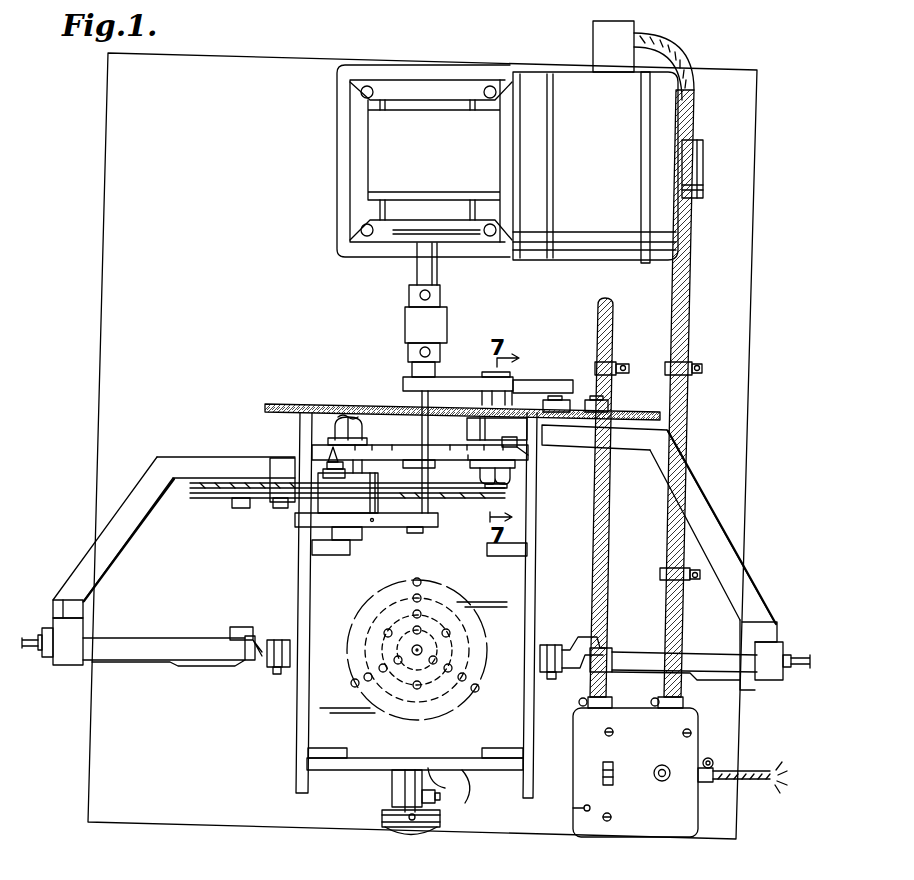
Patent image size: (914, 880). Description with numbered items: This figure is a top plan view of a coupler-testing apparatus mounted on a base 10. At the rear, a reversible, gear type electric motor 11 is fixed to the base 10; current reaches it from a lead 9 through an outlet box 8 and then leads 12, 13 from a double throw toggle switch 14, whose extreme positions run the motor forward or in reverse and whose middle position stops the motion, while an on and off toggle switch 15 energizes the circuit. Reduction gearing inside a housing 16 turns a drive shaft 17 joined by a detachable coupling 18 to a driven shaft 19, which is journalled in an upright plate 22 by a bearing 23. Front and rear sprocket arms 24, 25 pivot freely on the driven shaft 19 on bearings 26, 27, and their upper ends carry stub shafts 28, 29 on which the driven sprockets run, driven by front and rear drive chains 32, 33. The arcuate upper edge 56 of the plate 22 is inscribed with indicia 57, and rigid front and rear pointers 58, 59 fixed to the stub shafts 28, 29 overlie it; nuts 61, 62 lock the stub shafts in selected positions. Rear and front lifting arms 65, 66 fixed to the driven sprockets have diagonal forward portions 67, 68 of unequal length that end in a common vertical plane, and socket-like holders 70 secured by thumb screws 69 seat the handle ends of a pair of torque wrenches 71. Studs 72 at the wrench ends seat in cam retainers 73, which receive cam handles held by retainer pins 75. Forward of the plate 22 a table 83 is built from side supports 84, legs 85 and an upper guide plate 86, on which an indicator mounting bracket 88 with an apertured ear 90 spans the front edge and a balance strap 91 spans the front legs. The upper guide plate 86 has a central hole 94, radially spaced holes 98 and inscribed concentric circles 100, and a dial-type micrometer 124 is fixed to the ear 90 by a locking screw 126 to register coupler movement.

The outlet box 8 is at (674, 828).
The lead 9 is at (756, 771).
The base 10 is at (108, 246).
The electric motor 11 is at (521, 78).
The lead 12 is at (690, 316).
The lead 13 is at (613, 325).
The double throw toggle switch 14 is at (666, 768).
The on and off toggle switch 15 is at (613, 773).
The housing 16 is at (378, 150).
The drive shaft 17 is at (417, 271).
The coupling 18 is at (433, 312).
The driven shaft 19 is at (422, 397).
The upright plate 22 is at (398, 441).
The bearing 23 is at (447, 466).
The front sprocket arm 24 is at (388, 534).
The rear sprocket arm 25 is at (553, 386).
The bearing 26 is at (437, 523).
The bearing 27 is at (437, 376).
The stub shaft 28 is at (338, 414).
The stub shaft 29 is at (505, 489).
The front drive chain 32 is at (392, 487).
The rear drive chain 33 is at (376, 404).
The upper edge 56 is at (442, 453).
The indicia 57 is at (468, 455).
The front pointer 58 is at (318, 451).
The rear pointer 59 is at (518, 452).
The nut 61 is at (335, 428).
The nut 62 is at (512, 474).
The rear lifting arm 65 is at (633, 440).
The front lifting arm 66 is at (187, 460).
The forward portion 67 is at (700, 505).
The forward portion 68 is at (100, 555).
The thumb screw 69 is at (25, 643).
The socket-like holder 70 is at (62, 656).
The torque wrench 71 is at (156, 646).
The stud 72 is at (246, 627).
The cam retainer 73 is at (265, 661).
The retainer pin 75 is at (277, 674).
The table 83 is at (361, 785).
The side support 84 is at (300, 736).
The leg 85 is at (525, 548).
The upper guide plate 86 is at (478, 786).
The indicator mounting bracket 88 is at (442, 784).
The ear 90 is at (393, 788).
The balance strap 91 is at (440, 797).
The hole 94 is at (430, 650).
The hole 98 is at (477, 686).
The concentric circle 100 is at (406, 702).
The dial-type micrometer 124 is at (407, 849).
The locking screw 126 is at (438, 835).